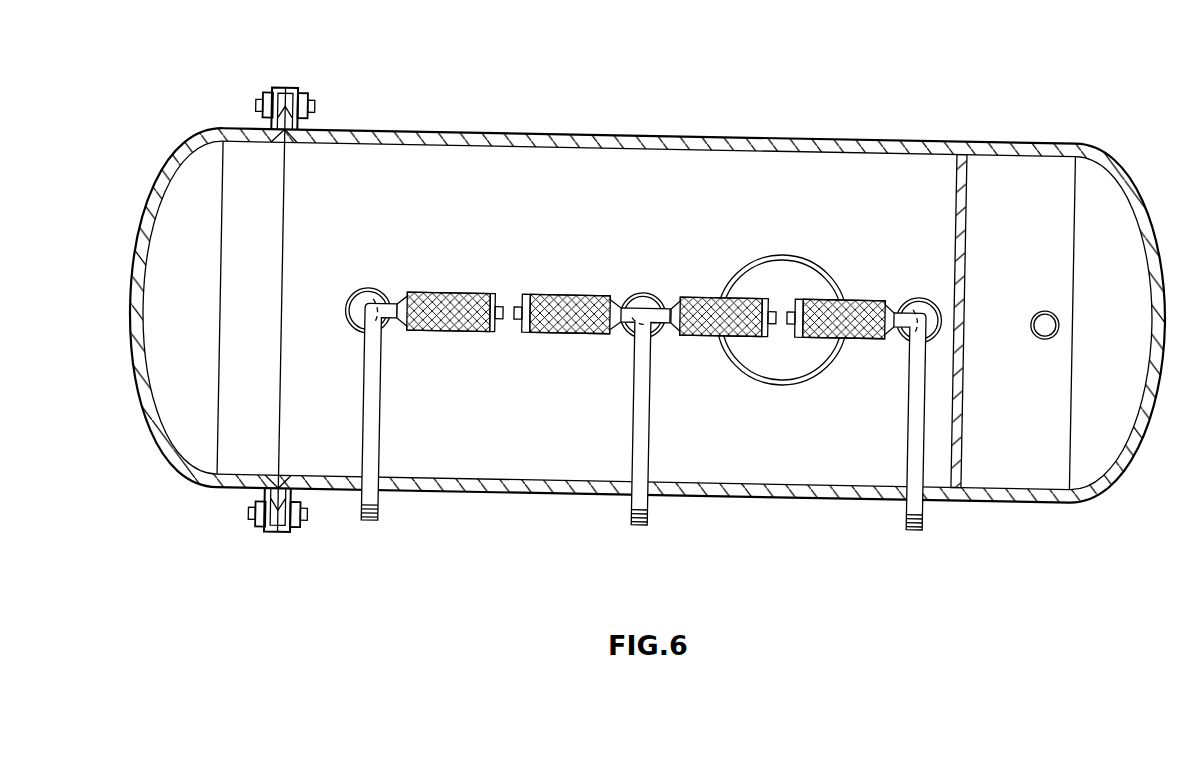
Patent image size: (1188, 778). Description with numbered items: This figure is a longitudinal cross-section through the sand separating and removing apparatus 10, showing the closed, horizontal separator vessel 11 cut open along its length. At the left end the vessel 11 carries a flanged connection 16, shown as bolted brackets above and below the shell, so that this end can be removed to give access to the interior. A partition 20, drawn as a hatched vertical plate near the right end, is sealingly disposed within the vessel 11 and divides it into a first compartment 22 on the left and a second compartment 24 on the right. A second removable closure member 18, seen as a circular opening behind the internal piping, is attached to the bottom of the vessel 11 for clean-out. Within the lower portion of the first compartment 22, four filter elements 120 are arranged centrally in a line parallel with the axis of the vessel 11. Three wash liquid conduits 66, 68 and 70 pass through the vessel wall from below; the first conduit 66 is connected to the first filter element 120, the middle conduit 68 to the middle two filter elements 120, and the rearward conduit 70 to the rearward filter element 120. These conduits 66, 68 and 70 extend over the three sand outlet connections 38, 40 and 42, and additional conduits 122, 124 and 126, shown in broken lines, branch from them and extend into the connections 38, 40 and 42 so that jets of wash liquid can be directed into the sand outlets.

The apparatus for separating and removing sand from a fluid stream 10 is at (764, 134).
The separator vessel 11 is at (601, 137).
The flanged connection 16 is at (293, 95).
The second removable closure member 18 is at (789, 377).
The partition 20 is at (964, 239).
The first compartment 22 is at (407, 164).
The second compartment 24 is at (1116, 196).
The sand outlet connection 38 is at (364, 293).
The sand outlet connection 40 is at (643, 293).
The sand outlet connection 42 is at (919, 293).
The wash liquid conduit 66 is at (383, 503).
The wash liquid conduit 68 is at (653, 505).
The wash liquid conduit 70 is at (927, 506).
The filter element 120 is at (462, 297).
The additional conduit 122 is at (364, 320).
The additional conduit 124 is at (613, 336).
The additional conduit 126 is at (905, 334).